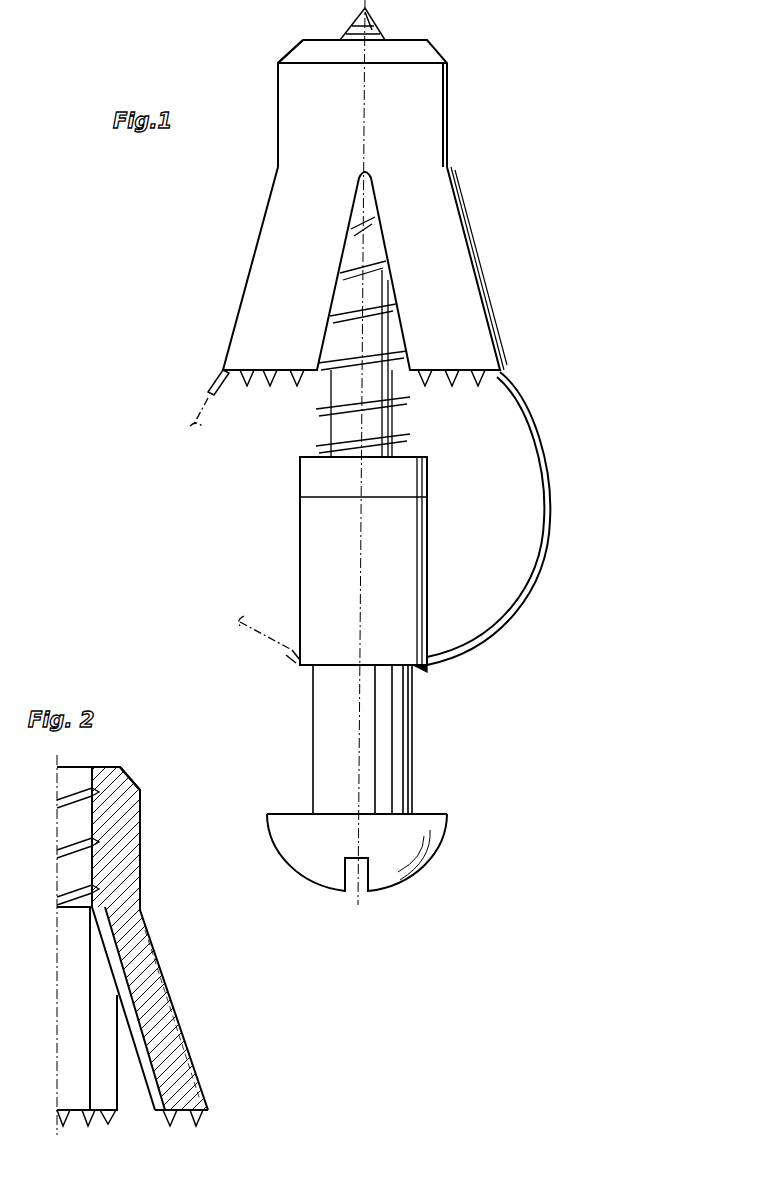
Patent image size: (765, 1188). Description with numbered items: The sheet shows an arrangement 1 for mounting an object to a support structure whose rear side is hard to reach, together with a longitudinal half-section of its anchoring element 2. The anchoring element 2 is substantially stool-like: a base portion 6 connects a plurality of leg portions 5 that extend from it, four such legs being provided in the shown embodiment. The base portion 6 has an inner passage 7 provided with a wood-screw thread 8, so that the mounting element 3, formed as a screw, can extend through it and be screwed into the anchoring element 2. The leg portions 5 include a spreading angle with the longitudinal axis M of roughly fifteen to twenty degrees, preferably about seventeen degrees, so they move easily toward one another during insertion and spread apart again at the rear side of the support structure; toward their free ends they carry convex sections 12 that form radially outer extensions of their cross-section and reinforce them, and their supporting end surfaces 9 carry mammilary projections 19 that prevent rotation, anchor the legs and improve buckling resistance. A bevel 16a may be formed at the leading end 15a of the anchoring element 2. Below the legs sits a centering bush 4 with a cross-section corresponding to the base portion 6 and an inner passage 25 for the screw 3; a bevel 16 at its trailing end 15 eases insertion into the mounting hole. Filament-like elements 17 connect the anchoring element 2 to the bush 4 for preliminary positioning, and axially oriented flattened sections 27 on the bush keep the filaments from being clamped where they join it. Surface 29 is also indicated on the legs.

In FIG. 1, the arrangement 1 is at (584, 296).
In FIG. 1, the anchoring element 2 is at (377, 260).
In FIG. 2, the anchoring element 2 is at (276, 909).
In FIG. 1, the mounting element 3 is at (398, 418).
In FIG. 1, the centering bush 4 is at (406, 560).
In FIG. 1, the leg portions 5 is at (262, 311).
In FIG. 2, the leg portions 5 is at (78, 1045).
In FIG. 1, the base portion 6 is at (458, 42).
In FIG. 2, the base portion 6 is at (143, 849).
In FIG. 1, the inner passage 7 is at (382, 38).
In FIG. 2, the inner passage 7 is at (62, 819).
In FIG. 2, the thread 8 is at (76, 797).
In FIG. 1, the supporting end surfaces 9 is at (259, 386).
In FIG. 2, the supporting end surfaces 9 is at (108, 1114).
In FIG. 2, the convex sections 12 is at (198, 1092).
In FIG. 1, the trailing end 15 is at (364, 561).
In FIG. 1, the leading end 15a is at (448, 40).
In FIG. 2, the leading end 15a is at (116, 757).
In FIG. 1, the bevel 16 is at (414, 482).
In FIG. 1, the bevel 16a is at (300, 45).
In FIG. 2, the bevel 16a is at (136, 770).
In FIG. 1, the connecting elements 17 is at (214, 384).
In FIG. 1, the mammilary projections 19 is at (246, 388).
In FIG. 2, the mammilary projections 19 is at (84, 1118).
In FIG. 1, the inner passage 25 is at (412, 670).
In FIG. 1, the flattened sections 27 is at (300, 553).
In FIG. 1, the leg inner surface 29 is at (318, 178).
In FIG. 1, the longitudinal axis M is at (372, 102).